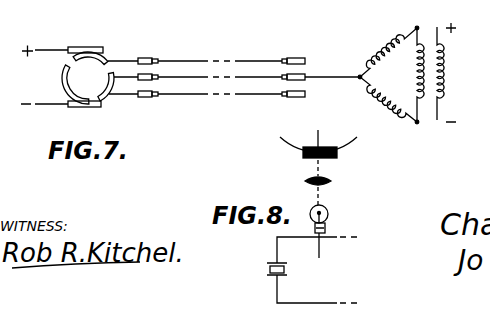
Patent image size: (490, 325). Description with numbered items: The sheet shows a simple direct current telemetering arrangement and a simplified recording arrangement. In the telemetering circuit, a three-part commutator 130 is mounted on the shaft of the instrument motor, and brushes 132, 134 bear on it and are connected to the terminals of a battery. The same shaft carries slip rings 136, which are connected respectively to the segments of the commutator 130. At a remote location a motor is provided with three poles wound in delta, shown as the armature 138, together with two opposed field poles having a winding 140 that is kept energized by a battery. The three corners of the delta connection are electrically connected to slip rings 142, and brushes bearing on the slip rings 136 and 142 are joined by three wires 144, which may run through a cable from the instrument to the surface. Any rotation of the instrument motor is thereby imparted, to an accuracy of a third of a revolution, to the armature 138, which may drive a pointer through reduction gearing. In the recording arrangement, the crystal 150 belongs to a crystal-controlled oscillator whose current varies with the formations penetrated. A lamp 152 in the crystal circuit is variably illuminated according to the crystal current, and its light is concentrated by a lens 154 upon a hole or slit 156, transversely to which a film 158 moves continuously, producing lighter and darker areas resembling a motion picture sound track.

In FIG. 7, the three-part commutator 130 is at (107, 62).
In FIG. 7, the brush 132 is at (83, 49).
In FIG. 7, the brush 134 is at (84, 106).
In FIG. 7, the slip rings 136 is at (152, 92).
In FIG. 7, the delta-wound armature 138 is at (386, 47).
In FIG. 7, the field winding 140 is at (443, 68).
In FIG. 7, the slip rings 142 is at (304, 91).
In FIG. 7, the wires 144 is at (253, 98).
In FIG. 8, the crystal 150 is at (270, 269).
In FIG. 8, the lamp 152 is at (330, 212).
In FIG. 8, the lens 154 is at (331, 177).
In FIG. 8, the hole or slit 156 is at (318, 153).
In FIG. 8, the film 158 is at (281, 139).